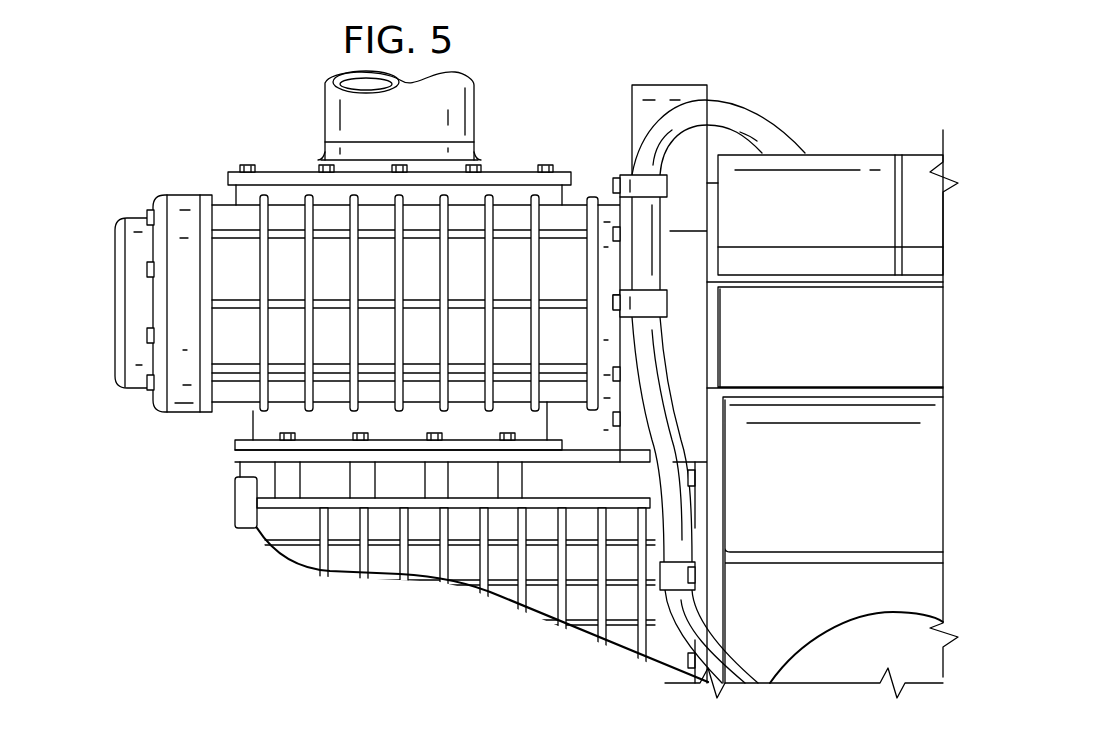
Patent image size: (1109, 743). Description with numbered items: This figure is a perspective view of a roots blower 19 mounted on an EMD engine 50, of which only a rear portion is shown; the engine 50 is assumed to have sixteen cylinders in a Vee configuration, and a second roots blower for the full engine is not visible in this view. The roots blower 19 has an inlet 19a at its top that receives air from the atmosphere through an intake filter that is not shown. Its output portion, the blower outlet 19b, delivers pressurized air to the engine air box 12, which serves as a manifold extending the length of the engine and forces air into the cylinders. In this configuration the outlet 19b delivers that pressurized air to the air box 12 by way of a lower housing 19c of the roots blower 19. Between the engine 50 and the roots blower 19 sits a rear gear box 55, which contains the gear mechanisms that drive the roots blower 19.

The roots blower 19 is at (373, 376).
The inlet 19a is at (330, 110).
The blower outlet 19b is at (260, 421).
The lower housing 19c is at (381, 563).
The rear gear box 55 is at (667, 92).
The engine 50 is at (833, 165).
The air box 12 is at (852, 633).